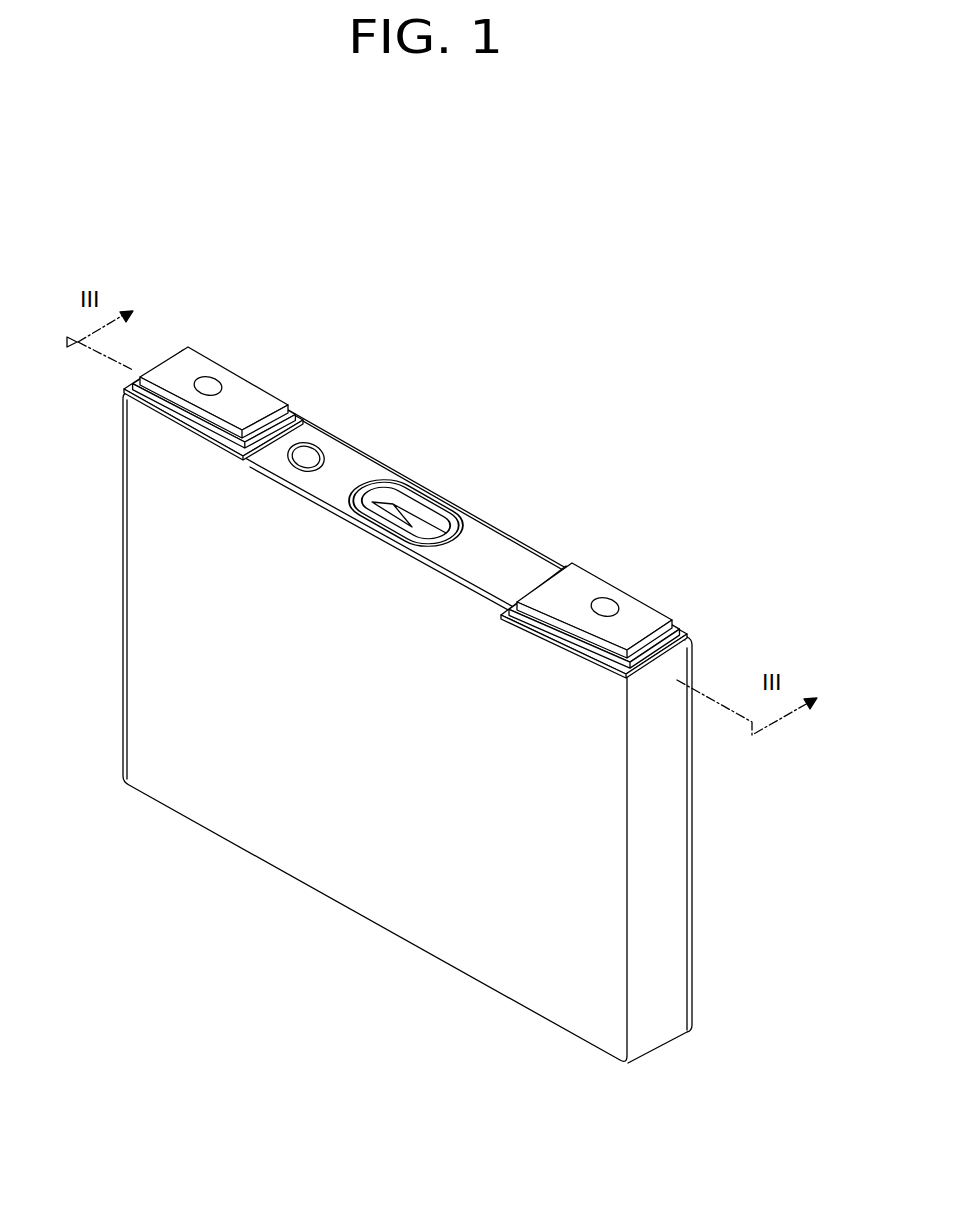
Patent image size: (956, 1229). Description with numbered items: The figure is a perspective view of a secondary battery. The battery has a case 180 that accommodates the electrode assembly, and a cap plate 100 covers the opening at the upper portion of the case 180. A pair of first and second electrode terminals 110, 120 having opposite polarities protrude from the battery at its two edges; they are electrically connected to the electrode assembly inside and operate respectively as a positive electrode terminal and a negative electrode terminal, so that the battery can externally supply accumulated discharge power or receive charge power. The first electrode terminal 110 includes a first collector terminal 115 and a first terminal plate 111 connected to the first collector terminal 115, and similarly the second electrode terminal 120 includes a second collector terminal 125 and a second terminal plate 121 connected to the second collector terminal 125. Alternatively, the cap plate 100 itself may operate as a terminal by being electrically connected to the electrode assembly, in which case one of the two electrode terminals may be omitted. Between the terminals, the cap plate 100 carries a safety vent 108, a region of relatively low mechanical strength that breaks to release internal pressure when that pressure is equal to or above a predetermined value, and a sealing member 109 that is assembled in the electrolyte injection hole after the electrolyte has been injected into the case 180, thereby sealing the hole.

The cap plate 100 is at (464, 706).
The safety vent 108 is at (410, 520).
The sealing member 109 is at (304, 454).
The first electrode terminal 110 is at (616, 569).
The first terminal plate 111 is at (624, 559).
The first collector terminal 115 is at (612, 605).
The second electrode terminal 120 is at (226, 340).
The second terminal plate 121 is at (234, 362).
The second collector terminal 125 is at (211, 381).
The case 180 is at (670, 882).